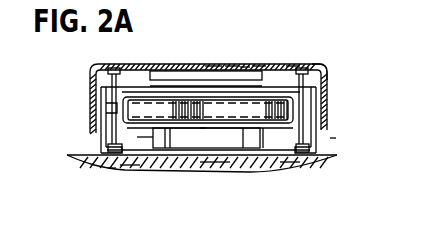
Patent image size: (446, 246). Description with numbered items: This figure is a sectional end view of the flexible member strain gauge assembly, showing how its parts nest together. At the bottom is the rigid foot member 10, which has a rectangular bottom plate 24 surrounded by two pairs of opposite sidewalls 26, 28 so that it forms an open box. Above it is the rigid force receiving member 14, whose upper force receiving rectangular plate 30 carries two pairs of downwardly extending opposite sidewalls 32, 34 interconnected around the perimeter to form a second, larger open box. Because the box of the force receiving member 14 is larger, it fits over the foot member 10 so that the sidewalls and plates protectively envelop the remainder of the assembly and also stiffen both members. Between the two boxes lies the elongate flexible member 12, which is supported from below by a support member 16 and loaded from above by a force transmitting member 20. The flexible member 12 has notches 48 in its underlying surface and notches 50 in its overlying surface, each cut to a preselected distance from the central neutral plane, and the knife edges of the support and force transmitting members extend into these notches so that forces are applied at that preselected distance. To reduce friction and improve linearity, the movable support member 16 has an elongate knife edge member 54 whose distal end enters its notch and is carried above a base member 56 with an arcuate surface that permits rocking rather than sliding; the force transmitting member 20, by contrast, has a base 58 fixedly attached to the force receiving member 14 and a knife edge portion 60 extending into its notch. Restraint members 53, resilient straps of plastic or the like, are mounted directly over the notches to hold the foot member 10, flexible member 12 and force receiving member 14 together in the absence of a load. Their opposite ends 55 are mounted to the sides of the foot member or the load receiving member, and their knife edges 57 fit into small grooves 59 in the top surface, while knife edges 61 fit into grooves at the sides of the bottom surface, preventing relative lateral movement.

The foot member 10 is at (215, 160).
The flexible member 12 is at (247, 141).
The force receiving member 14 is at (233, 64).
The support member 16 is at (172, 143).
The force transmitting member 20 is at (213, 65).
The rectangular bottom plate 24 is at (187, 141).
The sidewalls 26 is at (100, 143).
The sidewalls 28 is at (287, 160).
The force receiving rectangular plate 30 is at (172, 63).
The sidewalls 32 is at (89, 76).
The sidewalls 34 is at (326, 69).
The notches 48 is at (143, 175).
The notches 50 is at (258, 64).
The restraint members 53 is at (293, 65).
The knife edge member 54 is at (203, 131).
The opposite ends 55 is at (117, 67).
The base member 56 is at (165, 148).
The knife edges 57 is at (101, 101).
The base 58 is at (243, 66).
The grooves 59 is at (108, 170).
The knife edge portion 60 is at (190, 83).
The knife edges 61 is at (126, 112).